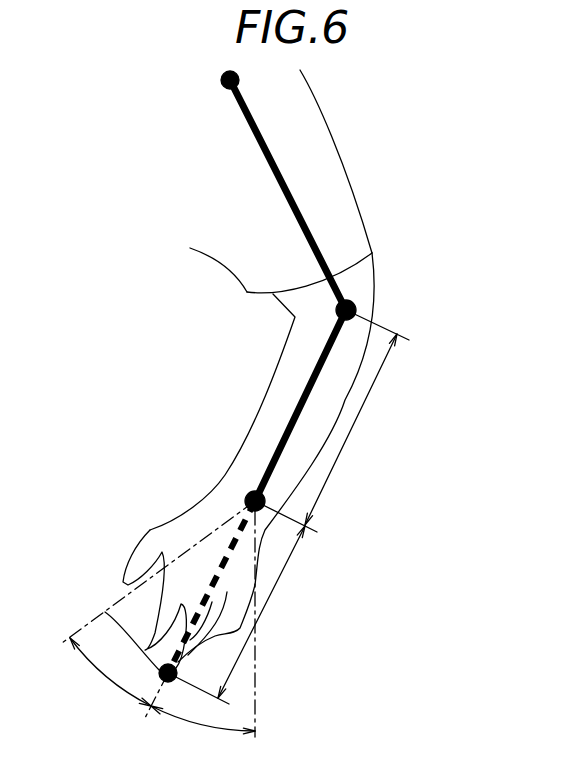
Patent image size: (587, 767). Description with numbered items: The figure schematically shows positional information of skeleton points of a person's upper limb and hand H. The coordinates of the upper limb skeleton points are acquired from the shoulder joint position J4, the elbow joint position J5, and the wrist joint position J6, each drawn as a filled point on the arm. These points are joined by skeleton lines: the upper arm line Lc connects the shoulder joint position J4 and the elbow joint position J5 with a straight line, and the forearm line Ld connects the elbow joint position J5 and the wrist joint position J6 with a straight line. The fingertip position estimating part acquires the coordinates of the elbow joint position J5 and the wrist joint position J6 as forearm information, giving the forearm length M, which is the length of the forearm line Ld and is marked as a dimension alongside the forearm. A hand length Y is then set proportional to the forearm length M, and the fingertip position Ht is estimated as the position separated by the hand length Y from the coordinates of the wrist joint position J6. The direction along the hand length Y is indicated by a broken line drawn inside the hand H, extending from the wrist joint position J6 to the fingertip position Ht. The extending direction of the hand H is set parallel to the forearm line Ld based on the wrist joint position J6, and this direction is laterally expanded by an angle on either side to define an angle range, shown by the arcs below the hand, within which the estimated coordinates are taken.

The shoulder joint position J4 is at (226, 88).
The elbow joint position J5 is at (353, 304).
The wrist joint position J6 is at (246, 492).
The upper arm line Lc is at (290, 205).
The forearm line Ld is at (302, 397).
The hand H is at (163, 530).
The fingertip position Ht is at (105, 612).
The forearm length M is at (332, 421).
The hand length Y is at (236, 615).